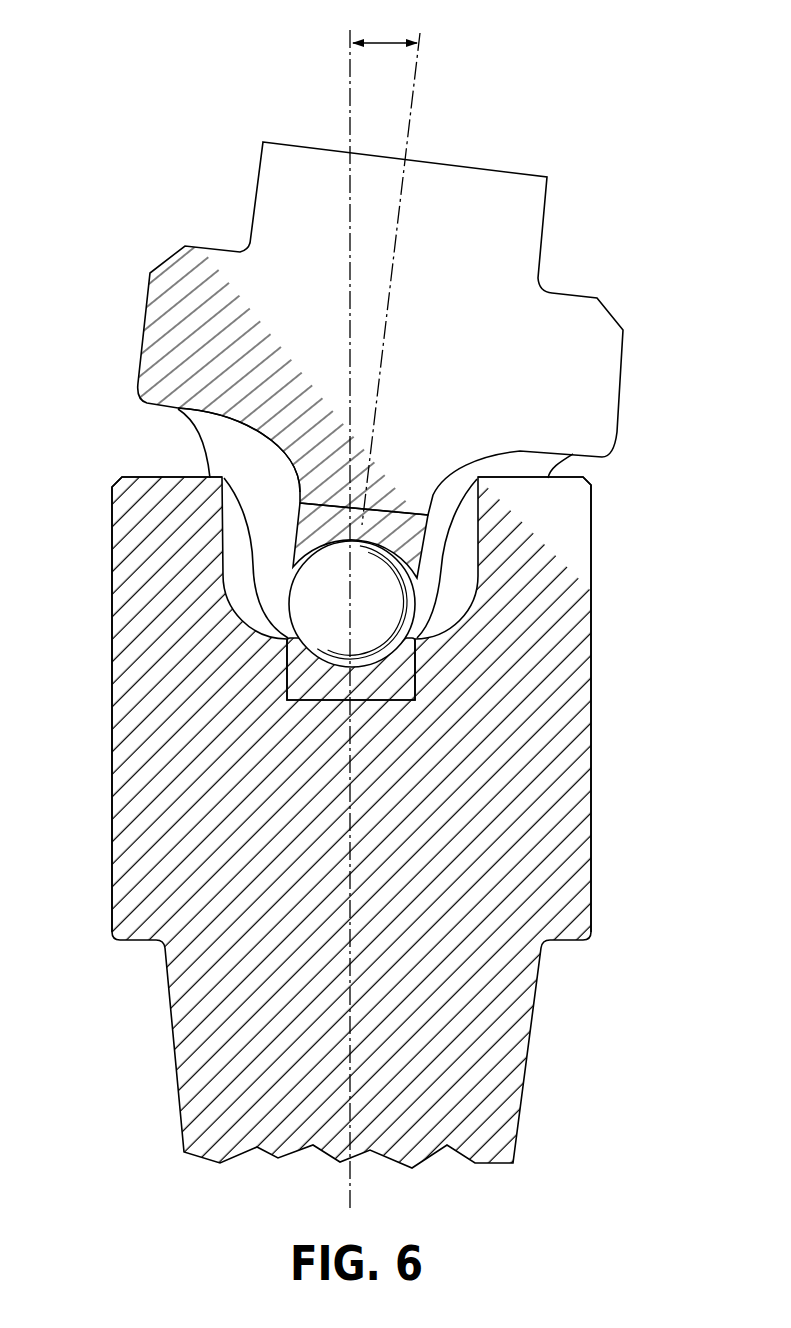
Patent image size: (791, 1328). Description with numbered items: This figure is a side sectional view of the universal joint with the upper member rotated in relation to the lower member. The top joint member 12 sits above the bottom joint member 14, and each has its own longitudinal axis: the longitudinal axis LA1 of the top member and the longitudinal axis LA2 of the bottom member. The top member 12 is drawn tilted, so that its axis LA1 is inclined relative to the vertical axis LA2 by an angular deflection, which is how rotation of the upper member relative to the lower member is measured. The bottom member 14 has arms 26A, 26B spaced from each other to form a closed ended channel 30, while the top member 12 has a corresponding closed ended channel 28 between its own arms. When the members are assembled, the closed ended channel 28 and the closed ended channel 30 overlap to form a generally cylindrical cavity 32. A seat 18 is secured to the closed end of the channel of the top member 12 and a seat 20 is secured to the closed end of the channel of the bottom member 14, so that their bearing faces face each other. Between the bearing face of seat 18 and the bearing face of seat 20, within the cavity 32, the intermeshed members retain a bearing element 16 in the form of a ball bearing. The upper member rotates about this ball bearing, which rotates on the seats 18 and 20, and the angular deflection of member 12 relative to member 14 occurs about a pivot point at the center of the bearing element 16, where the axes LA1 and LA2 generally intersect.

The top joint member 12 is at (143, 329).
The bottom joint member 14 is at (112, 737).
The bearing element 16 is at (362, 621).
The seat 18 is at (395, 522).
The seat 20 is at (315, 697).
The arm 26A is at (592, 536).
The arm 26B is at (112, 543).
The closed ended channel 28 is at (243, 467).
The closed ended channel 30 is at (247, 594).
The cylindrical cavity 32 is at (432, 556).
The longitudinal axis LA1 is at (413, 109).
The longitudinal axis LA2 is at (349, 1185).